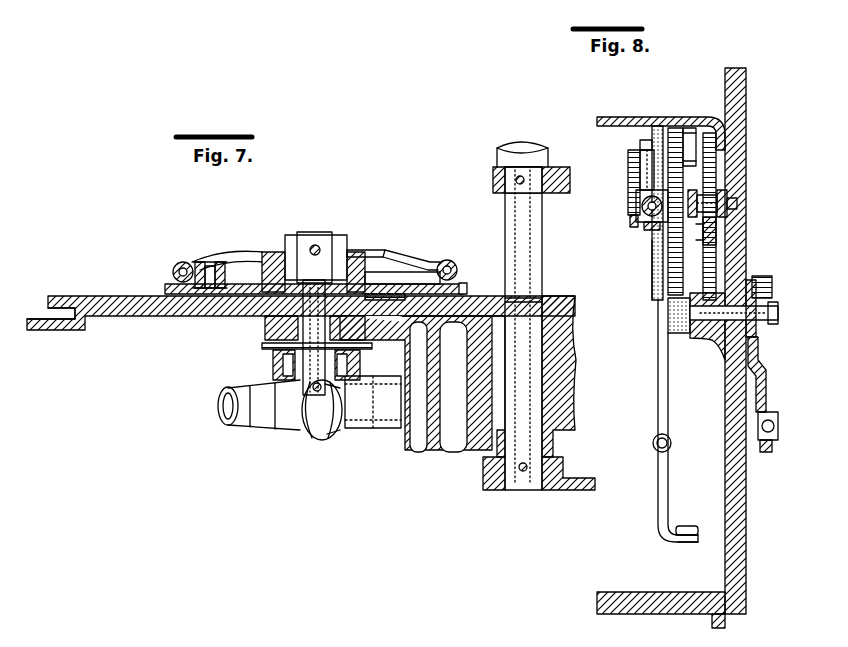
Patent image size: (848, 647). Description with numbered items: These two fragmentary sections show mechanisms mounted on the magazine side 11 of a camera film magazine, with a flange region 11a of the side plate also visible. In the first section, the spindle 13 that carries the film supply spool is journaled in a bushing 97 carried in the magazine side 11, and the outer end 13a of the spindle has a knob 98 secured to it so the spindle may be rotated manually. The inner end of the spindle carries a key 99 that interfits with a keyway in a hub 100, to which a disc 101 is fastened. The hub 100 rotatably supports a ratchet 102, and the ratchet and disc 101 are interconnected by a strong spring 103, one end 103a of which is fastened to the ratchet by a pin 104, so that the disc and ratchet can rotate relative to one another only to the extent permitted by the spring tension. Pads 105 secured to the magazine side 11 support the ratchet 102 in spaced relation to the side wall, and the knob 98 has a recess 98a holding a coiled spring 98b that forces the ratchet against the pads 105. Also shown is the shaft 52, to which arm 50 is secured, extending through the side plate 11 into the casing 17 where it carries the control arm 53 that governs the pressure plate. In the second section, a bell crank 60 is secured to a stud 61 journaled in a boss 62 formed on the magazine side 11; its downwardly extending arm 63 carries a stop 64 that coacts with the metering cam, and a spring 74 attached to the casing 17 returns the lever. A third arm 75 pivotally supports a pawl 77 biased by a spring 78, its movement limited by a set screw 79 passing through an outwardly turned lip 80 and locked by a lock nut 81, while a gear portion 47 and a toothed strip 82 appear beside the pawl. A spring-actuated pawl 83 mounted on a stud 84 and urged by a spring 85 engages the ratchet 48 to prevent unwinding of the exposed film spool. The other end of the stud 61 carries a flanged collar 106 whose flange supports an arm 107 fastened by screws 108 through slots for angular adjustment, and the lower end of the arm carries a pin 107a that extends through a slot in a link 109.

In FIG. 7, the magazine side 11 is at (116, 306).
In FIG. 8, the magazine side 11 is at (732, 80).
In FIG. 7, the flange 11a is at (50, 318).
In FIG. 7, the spindle 13 is at (320, 250).
In FIG. 7, the outer end of spindle 13a is at (318, 422).
In FIG. 7, the casing 17 is at (432, 432).
In FIG. 8, the casing 17 is at (604, 117).
In FIG. 8, the gear 47 is at (690, 130).
In FIG. 8, the ratchet 48 is at (709, 133).
In FIG. 7, the arm 50 is at (548, 185).
In FIG. 7, the shaft 52 is at (525, 352).
In FIG. 7, the control arm 53 is at (566, 490).
In FIG. 8, the bell crank 60 is at (650, 283).
In FIG. 8, the stud 61 is at (668, 310).
In FIG. 8, the boss 62 is at (700, 337).
In FIG. 8, the arm 63 is at (658, 393).
In FIG. 8, the stop 64 is at (688, 542).
In FIG. 8, the spring 74 is at (671, 443).
In FIG. 8, the arm 75 is at (658, 244).
In FIG. 8, the pawl 77 is at (657, 128).
In FIG. 8, the spring 78 is at (630, 165).
In FIG. 8, the set screw 79 is at (648, 228).
In FIG. 8, the lip 80 is at (640, 181).
In FIG. 8, the lock nut 81 is at (636, 204).
In FIG. 8, the rack 82 is at (675, 128).
In FIG. 8, the pawl 83 is at (716, 232).
In FIG. 8, the stud 84 is at (737, 203).
In FIG. 8, the spring 85 is at (700, 234).
In FIG. 7, the bushing 97 is at (355, 340).
In FIG. 7, the knob 98 is at (300, 400).
In FIG. 7, the recess 98a is at (265, 346).
In FIG. 7, the coiled spring 98b is at (274, 364).
In FIG. 7, the key 99 is at (290, 236).
In FIG. 7, the hub 100 is at (272, 254).
In FIG. 7, the disc 101 is at (392, 252).
In FIG. 7, the ratchet 102 is at (465, 283).
In FIG. 7, the spring 103 is at (446, 260).
In FIG. 7, the end of spring 103a is at (185, 262).
In FIG. 7, the pin 104 is at (209, 262).
In FIG. 7, the pads 105 is at (390, 300).
In FIG. 8, the flanged collar 106 is at (770, 318).
In FIG. 8, the arm 107 is at (766, 372).
In FIG. 8, the pin 107a is at (770, 426).
In FIG. 8, the screws 108 is at (768, 278).
In FIG. 8, the link 109 is at (772, 446).